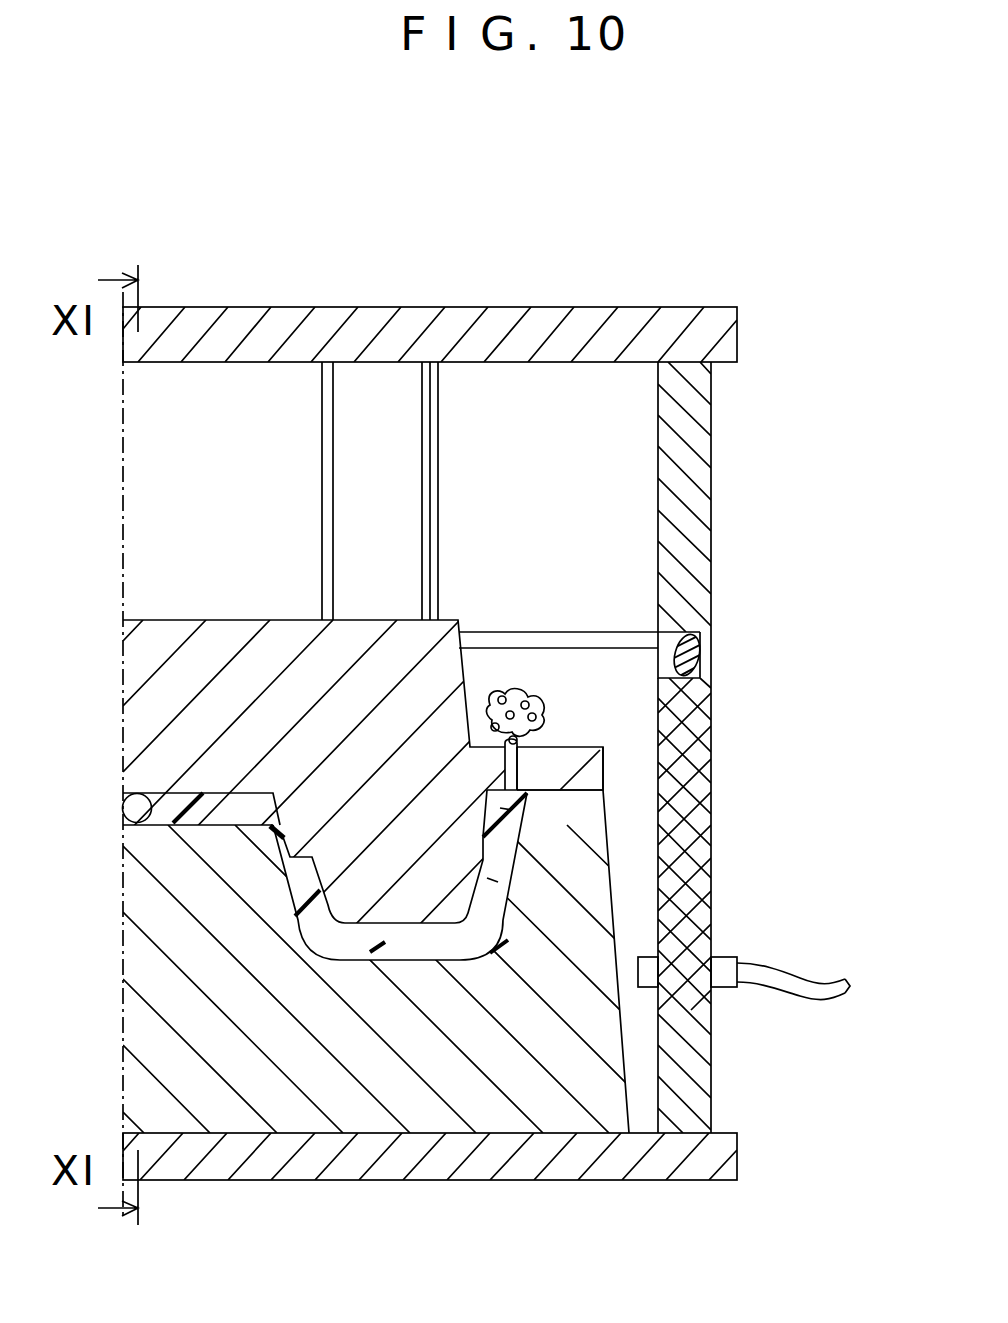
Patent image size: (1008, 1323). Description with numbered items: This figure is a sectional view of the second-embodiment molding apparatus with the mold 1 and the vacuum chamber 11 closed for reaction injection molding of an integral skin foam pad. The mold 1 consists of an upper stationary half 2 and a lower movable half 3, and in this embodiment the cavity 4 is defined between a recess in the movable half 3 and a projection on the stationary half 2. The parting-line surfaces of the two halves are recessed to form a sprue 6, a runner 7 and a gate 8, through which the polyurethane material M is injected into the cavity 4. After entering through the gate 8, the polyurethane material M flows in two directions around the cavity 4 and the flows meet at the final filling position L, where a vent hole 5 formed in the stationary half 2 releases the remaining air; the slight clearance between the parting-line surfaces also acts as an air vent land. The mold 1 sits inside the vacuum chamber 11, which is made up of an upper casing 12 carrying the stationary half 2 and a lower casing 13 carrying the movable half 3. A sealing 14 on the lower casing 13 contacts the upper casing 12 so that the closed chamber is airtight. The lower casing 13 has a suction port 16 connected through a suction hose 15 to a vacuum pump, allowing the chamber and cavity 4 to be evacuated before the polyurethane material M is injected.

The mold 1 is at (812, 666).
The stationary half 2 is at (593, 773).
The movable half 3 is at (592, 807).
The cavity 4 is at (410, 958).
The vent hole 5 is at (513, 775).
The sprue 6 is at (121, 802).
The runner 7 is at (213, 826).
The gate 8 is at (277, 843).
The vacuum chamber 11 is at (666, 278).
The upper casing 12 is at (700, 406).
The lower casing 13 is at (683, 915).
The sealing 14 is at (697, 641).
The suction hose 15 is at (816, 990).
The suction port 16 is at (647, 980).
The final filling position L is at (500, 808).
The polyurethane material M is at (487, 878).